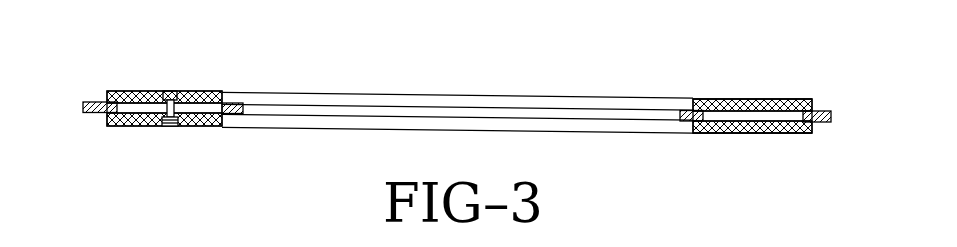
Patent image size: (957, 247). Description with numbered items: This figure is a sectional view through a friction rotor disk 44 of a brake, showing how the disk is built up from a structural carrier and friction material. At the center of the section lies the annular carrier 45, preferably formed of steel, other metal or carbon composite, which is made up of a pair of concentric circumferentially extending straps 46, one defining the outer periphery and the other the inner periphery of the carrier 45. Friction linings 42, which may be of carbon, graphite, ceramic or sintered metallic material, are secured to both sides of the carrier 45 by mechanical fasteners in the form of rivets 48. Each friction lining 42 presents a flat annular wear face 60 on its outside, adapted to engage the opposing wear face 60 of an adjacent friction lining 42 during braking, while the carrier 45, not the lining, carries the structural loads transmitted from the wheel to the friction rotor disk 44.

The friction lining 42 is at (740, 99).
The friction rotor disk 44 is at (362, 100).
The annular carrier 45 is at (532, 108).
The circumferentially extending strap 46 is at (95, 102).
The rivet 48 is at (167, 91).
The wear face 60 is at (773, 99).